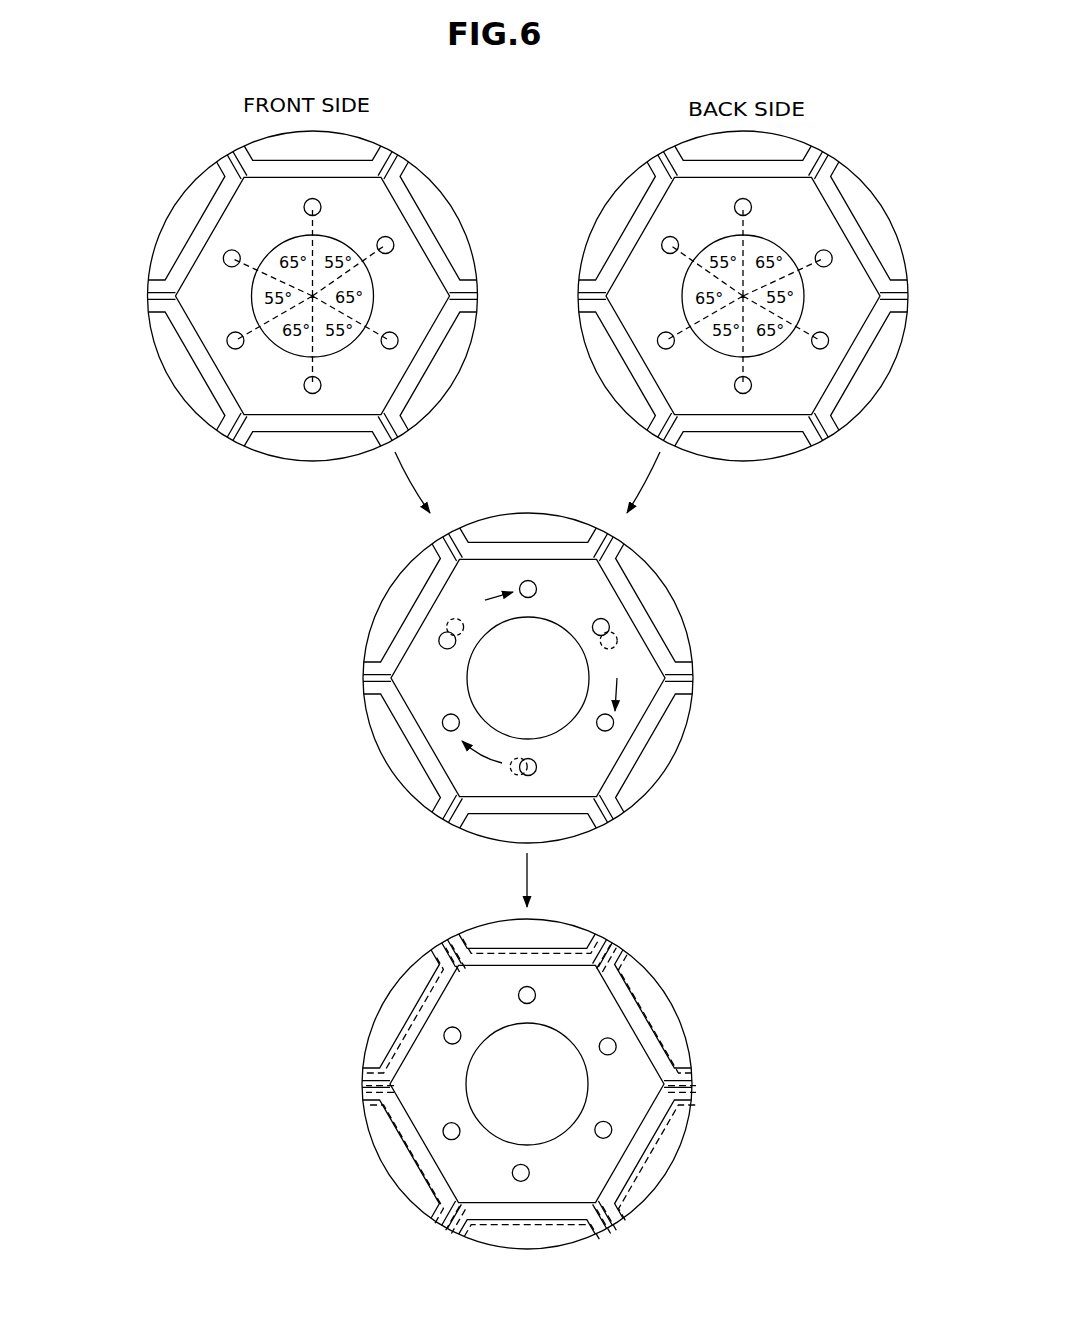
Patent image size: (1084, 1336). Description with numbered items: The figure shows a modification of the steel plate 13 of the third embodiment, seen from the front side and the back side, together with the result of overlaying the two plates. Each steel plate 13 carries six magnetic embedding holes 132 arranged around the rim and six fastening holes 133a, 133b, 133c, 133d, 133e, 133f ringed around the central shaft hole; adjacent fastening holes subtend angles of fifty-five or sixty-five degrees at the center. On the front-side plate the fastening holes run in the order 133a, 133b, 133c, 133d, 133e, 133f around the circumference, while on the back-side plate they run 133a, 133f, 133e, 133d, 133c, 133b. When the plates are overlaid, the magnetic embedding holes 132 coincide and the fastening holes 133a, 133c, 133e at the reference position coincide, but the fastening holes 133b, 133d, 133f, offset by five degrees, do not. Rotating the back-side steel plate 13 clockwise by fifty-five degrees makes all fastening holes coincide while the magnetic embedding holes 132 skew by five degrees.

The steel plate 13 is at (186, 149).
The magnetic embedding hole 132 is at (192, 233).
The fastening hole 133a is at (546, 388).
The fastening hole 133b is at (541, 451).
The fastening hole 133c is at (513, 520).
The fastening hole 133d is at (511, 587).
The fastening hole 133e is at (517, 531).
The fastening hole 133f is at (535, 423).